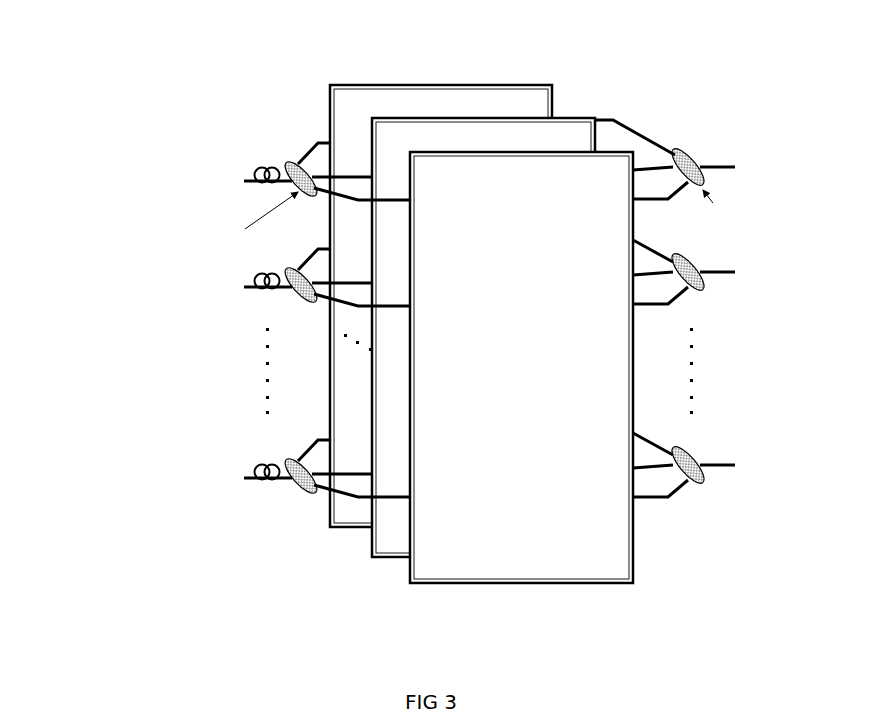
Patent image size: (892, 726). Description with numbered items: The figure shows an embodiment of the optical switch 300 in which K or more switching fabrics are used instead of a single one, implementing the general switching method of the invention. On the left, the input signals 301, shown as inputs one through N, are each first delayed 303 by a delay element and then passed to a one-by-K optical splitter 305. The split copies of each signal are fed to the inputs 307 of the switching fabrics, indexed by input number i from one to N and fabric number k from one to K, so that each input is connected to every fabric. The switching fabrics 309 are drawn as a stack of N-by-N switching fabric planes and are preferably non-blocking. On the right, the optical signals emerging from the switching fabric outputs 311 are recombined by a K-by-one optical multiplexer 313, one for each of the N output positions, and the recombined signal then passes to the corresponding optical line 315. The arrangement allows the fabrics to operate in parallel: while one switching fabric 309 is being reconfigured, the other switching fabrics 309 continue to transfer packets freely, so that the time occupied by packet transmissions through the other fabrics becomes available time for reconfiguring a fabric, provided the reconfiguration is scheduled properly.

The optical switching system 300 is at (431, 304).
The input signal 301 is at (221, 181).
The delay 303 is at (276, 184).
The optical splitter 305 is at (306, 196).
The switching fabric input 307 is at (346, 130).
The switching fabric 309 is at (565, 152).
The switching fabric output 311 is at (593, 190).
The optical multiplexer 313 is at (692, 158).
The optical line 315 is at (758, 164).